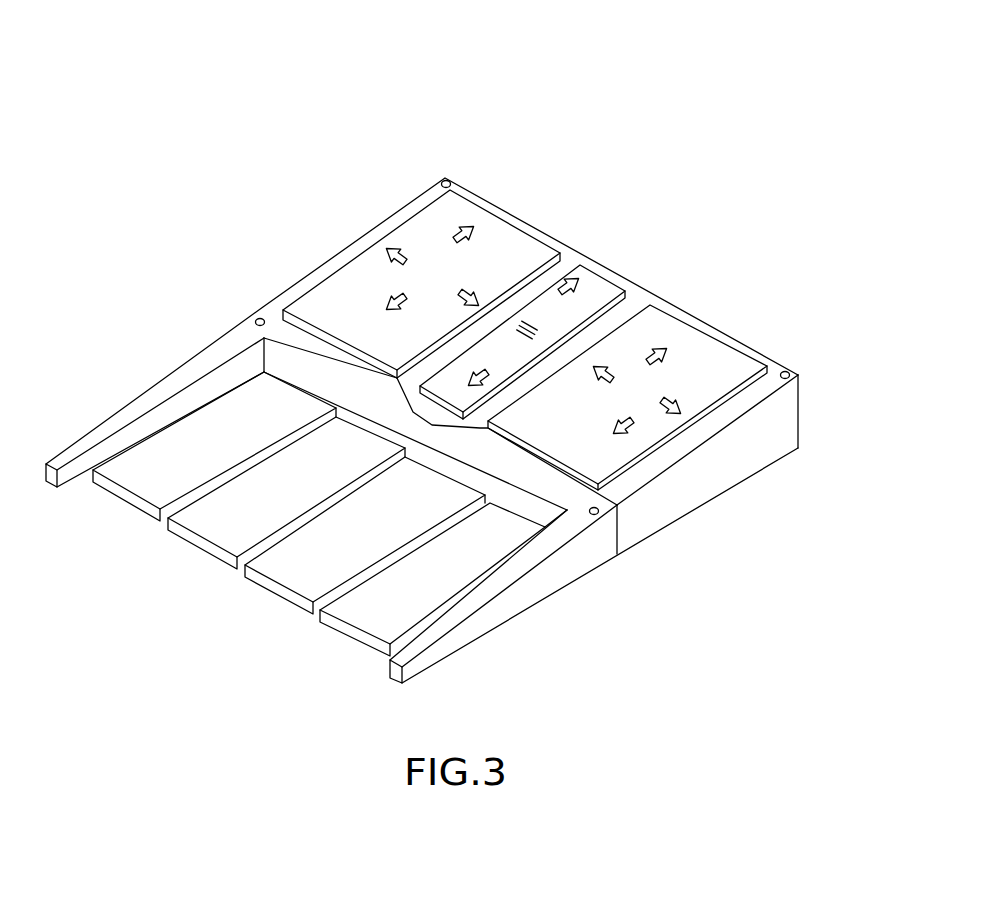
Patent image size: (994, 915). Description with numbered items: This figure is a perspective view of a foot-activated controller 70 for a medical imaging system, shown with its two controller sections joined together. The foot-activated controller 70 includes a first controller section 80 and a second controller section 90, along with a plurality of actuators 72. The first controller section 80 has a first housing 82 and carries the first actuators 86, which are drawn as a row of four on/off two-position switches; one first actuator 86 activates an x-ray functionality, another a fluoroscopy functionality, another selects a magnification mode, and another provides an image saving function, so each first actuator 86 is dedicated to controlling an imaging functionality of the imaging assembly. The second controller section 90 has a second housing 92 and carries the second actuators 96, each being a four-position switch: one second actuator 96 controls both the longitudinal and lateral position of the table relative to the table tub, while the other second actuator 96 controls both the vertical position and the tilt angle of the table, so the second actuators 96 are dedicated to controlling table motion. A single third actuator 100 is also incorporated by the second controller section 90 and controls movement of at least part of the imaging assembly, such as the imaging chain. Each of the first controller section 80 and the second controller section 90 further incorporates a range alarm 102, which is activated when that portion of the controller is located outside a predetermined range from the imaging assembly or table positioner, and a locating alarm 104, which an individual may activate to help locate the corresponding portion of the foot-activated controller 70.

The foot-activated controller 70 is at (590, 108).
The actuator 72 is at (168, 650).
The first controller section 80 is at (507, 622).
The first housing 82 is at (570, 580).
The first actuator 86 is at (180, 537).
The second controller section 90 is at (798, 400).
The second housing 92 is at (718, 478).
The second actuator 96 is at (361, 307).
The third actuator 100 is at (605, 277).
The range alarm 102 is at (448, 180).
The locating alarm 104 is at (783, 372).